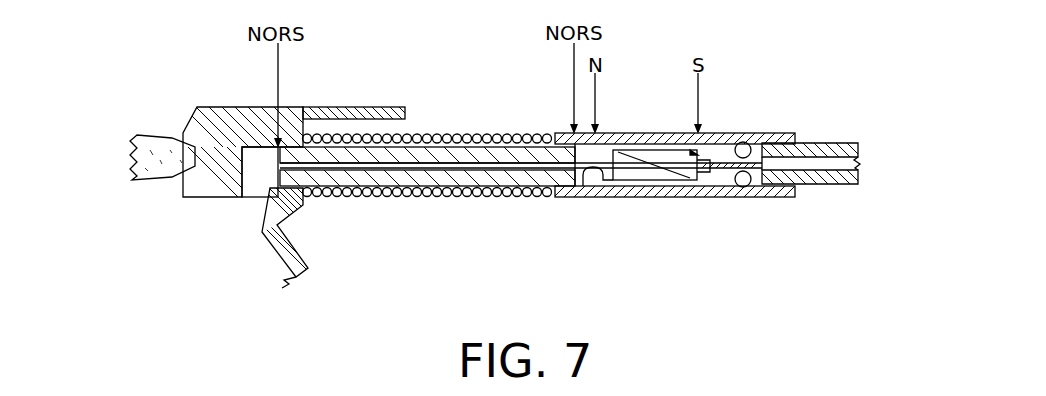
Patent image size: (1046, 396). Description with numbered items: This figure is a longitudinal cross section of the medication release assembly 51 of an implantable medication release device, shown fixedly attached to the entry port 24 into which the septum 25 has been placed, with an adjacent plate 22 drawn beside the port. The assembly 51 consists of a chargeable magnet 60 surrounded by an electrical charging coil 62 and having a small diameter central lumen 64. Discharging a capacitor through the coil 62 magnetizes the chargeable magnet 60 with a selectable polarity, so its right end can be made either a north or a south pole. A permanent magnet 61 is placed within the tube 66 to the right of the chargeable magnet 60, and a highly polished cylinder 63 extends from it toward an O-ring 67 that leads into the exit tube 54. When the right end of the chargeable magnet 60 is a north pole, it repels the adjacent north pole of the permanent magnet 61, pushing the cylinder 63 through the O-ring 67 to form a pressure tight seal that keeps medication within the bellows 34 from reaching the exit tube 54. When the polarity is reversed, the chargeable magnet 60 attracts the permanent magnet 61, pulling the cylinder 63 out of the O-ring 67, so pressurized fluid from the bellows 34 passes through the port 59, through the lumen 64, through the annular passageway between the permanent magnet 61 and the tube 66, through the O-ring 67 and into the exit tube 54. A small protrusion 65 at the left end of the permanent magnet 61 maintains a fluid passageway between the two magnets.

The upper plate 22 is at (355, 107).
The entry port 24 is at (192, 197).
The septum 25 is at (148, 135).
The bellows 34 is at (300, 278).
The medication release assembly 51 is at (610, 276).
The exit tube 54 is at (838, 143).
The port 59 is at (262, 176).
The chargeable magnet 60 is at (427, 152).
The permanent magnet 61 is at (647, 150).
The electrical charging coil 62 is at (387, 197).
The cylinder 63 is at (700, 197).
The central lumen 64 is at (447, 166).
The protrusion 65 is at (598, 197).
The tube 66 is at (777, 133).
The O-ring 67 is at (741, 133).